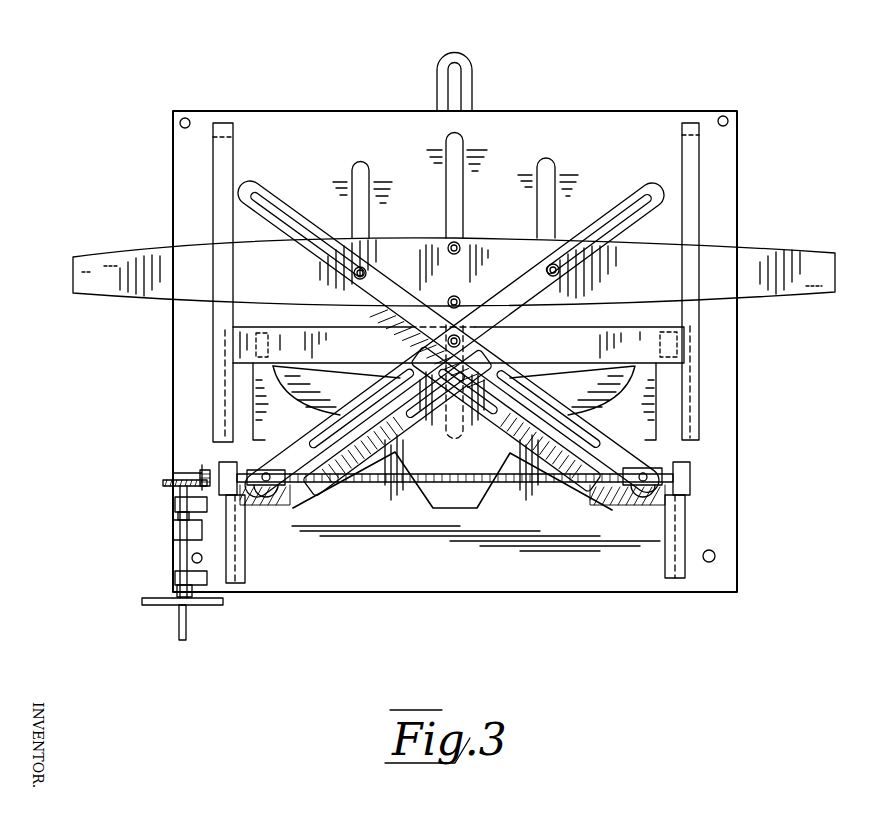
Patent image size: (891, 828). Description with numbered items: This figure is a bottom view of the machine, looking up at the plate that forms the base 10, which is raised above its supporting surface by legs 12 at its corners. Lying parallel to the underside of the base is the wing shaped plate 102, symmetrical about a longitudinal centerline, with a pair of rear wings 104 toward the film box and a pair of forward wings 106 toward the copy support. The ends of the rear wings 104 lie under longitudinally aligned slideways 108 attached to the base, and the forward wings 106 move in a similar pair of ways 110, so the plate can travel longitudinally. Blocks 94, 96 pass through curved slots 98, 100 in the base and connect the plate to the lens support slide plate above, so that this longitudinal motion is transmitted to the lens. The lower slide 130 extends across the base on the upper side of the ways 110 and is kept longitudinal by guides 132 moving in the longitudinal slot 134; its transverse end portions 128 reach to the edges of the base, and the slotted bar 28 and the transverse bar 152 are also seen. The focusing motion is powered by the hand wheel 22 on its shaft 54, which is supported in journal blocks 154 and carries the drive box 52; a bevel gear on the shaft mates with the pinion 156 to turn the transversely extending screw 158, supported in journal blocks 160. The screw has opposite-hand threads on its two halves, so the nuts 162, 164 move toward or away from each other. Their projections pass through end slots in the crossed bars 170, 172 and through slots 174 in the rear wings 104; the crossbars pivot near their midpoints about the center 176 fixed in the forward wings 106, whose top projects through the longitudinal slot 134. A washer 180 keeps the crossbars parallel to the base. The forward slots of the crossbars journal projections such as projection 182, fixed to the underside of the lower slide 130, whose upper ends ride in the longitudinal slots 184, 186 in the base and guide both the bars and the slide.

The base 10 is at (738, 385).
The legs 12 is at (190, 119).
The hand wheel 22 is at (186, 615).
The slotted bar 28 is at (462, 78).
The drive box 52 is at (177, 537).
The shaft 54 is at (178, 518).
The block 94 is at (658, 352).
The block 96 is at (270, 345).
The curved slot 98 is at (650, 440).
The curved slot 100 is at (232, 440).
The wing shaped plate 102 is at (358, 364).
The rear wings 104 is at (300, 500).
The forward wings 106 is at (258, 339).
The slideways 108 is at (245, 572).
The ways 110 is at (218, 155).
The wing ends 128 is at (73, 272).
The lower slide 130 is at (790, 262).
The guides 132 is at (457, 246).
The longitudinal slot 134 is at (456, 196).
The transverse bar 152 is at (163, 483).
The journal blocks 154 is at (175, 504).
The pinion 156 is at (170, 468).
The screw 158 is at (390, 487).
The journal blocks 160 is at (236, 470).
The nut 162 is at (266, 492).
The nut 164 is at (634, 488).
The crossbar 170 is at (540, 380).
The crossbar 172 is at (388, 372).
The slots 174 is at (392, 425).
The center 176 is at (459, 337).
The washer 180 is at (364, 270).
The projection 182 is at (556, 266).
The longitudinal slot 184 is at (365, 172).
The longitudinal slot 186 is at (551, 170).